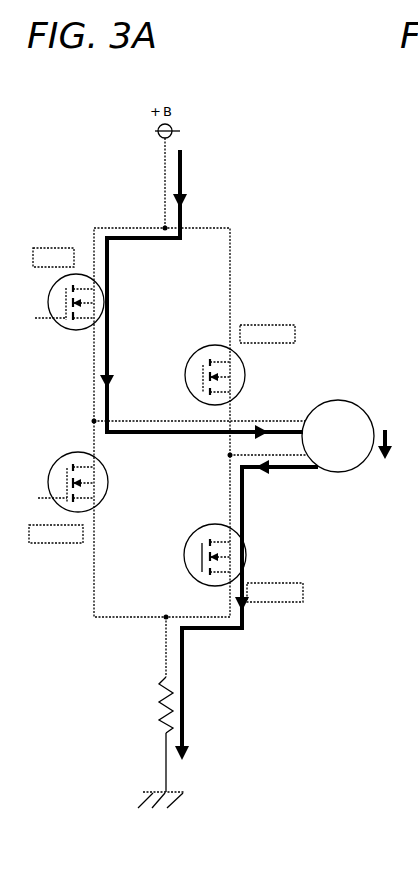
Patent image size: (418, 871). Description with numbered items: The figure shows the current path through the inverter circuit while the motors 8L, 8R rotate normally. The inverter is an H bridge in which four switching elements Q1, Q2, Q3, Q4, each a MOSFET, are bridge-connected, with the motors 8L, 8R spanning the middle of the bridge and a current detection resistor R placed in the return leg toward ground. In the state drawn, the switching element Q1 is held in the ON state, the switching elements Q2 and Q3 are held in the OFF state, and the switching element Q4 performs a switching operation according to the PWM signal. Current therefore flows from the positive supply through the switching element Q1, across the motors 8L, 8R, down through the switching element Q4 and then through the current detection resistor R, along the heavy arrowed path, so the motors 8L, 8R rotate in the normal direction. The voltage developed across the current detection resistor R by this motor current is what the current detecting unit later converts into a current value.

The motor 8L is at (348, 413).
The motor 8R is at (340, 400).
The switching element Q1 is at (86, 289).
The switching element Q2 is at (84, 497).
The switching element Q3 is at (240, 365).
The switching element Q4 is at (243, 563).
The current detection resistor R is at (153, 704).